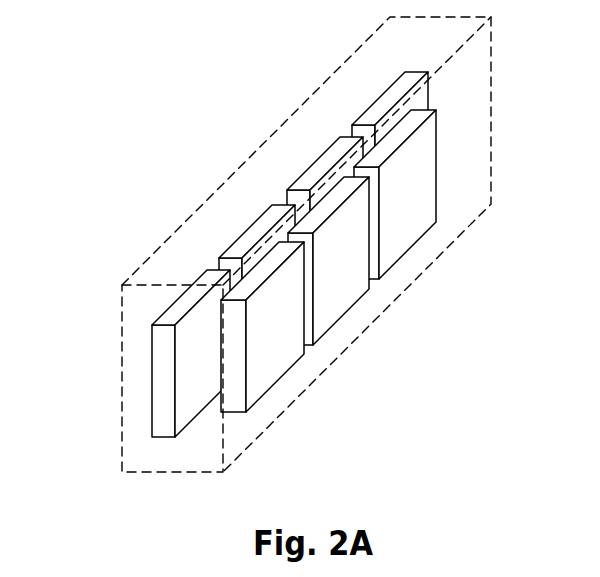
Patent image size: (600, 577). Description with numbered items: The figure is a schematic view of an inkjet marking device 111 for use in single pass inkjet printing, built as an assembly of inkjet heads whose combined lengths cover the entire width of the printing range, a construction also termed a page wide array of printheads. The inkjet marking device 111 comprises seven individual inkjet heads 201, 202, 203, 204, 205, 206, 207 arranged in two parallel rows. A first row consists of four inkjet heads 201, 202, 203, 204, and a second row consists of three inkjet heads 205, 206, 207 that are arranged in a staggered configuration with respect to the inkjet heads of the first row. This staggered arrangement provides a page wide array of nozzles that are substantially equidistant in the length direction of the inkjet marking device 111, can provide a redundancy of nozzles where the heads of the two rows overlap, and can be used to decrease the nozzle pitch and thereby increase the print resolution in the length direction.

The inkjet head 201 is at (178, 308).
The inkjet head 202 is at (245, 242).
The inkjet head 203 is at (323, 162).
The inkjet head 204 is at (392, 90).
The inkjet head 205 is at (268, 380).
The inkjet head 206 is at (347, 265).
The inkjet head 207 is at (410, 190).
The inkjet marking device 111 is at (393, 333).